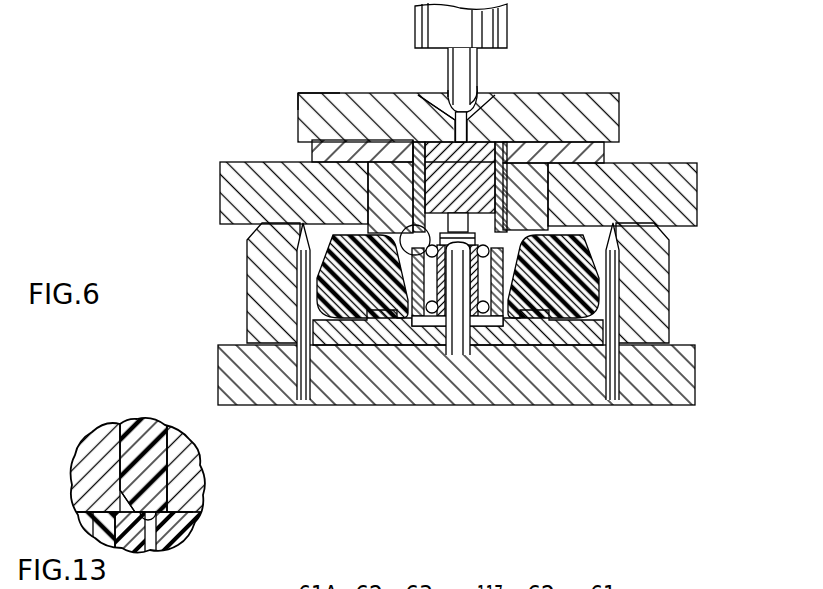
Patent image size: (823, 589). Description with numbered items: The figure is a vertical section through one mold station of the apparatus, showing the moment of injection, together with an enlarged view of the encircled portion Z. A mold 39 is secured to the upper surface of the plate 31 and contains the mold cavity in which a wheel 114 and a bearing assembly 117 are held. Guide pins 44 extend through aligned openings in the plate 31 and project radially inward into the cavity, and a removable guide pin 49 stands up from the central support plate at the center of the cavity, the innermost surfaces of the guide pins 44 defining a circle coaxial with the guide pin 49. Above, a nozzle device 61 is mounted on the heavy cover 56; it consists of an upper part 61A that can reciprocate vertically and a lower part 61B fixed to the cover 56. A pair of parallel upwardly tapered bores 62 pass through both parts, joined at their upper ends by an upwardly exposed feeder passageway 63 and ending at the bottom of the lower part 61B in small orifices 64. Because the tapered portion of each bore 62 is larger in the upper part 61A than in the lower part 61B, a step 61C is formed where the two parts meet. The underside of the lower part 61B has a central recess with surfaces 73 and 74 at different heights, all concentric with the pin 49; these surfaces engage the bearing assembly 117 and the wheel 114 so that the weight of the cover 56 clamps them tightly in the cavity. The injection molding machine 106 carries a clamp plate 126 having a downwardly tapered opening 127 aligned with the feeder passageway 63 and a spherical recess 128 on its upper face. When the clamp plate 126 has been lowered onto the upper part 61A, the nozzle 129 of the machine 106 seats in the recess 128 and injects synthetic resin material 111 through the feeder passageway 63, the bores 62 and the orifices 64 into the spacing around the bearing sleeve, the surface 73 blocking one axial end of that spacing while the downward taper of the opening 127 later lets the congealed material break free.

In FIG. 6, the injection molding machine 106 is at (518, 24).
In FIG. 6, the nozzle device 61 is at (582, 136).
In FIG. 6, the upper part 61A is at (318, 153).
In FIG. 6, the lower part 61B is at (525, 205).
In FIG. 13, the lower part 61B is at (87, 468).
In FIG. 6, the step 61C is at (319, 98).
In FIG. 6, the upwardly tapered bores 62 is at (496, 196).
In FIG. 13, the upwardly tapered bores 62 is at (157, 423).
In FIG. 6, the feeder passageway 63 is at (467, 138).
In FIG. 6, the cover 56 is at (665, 163).
In FIG. 6, the clamp plate 126 is at (307, 97).
In FIG. 6, the downwardly tapered opening 127 is at (453, 121).
In FIG. 6, the spherical recess 128 is at (466, 90).
In FIG. 6, the nozzle 129 is at (448, 88).
In FIG. 6, the synthetic resin material 111 is at (413, 138).
In FIG. 6, the encircled portion Z is at (402, 230).
In FIG. 6, the surface 74 is at (407, 258).
In FIG. 6, the surface 73 is at (387, 290).
In FIG. 13, the surface 73 is at (83, 527).
In FIG. 6, the mold 39 is at (660, 300).
In FIG. 6, the plate 31 is at (684, 380).
In FIG. 6, the guide pins 44 is at (301, 395).
In FIG. 6, the bearing assembly 117 is at (433, 323).
In FIG. 6, the removable guide pin 49 is at (456, 340).
In FIG. 6, the wheel 114 is at (572, 330).
In FIG. 13, the orifices 64 is at (180, 533).